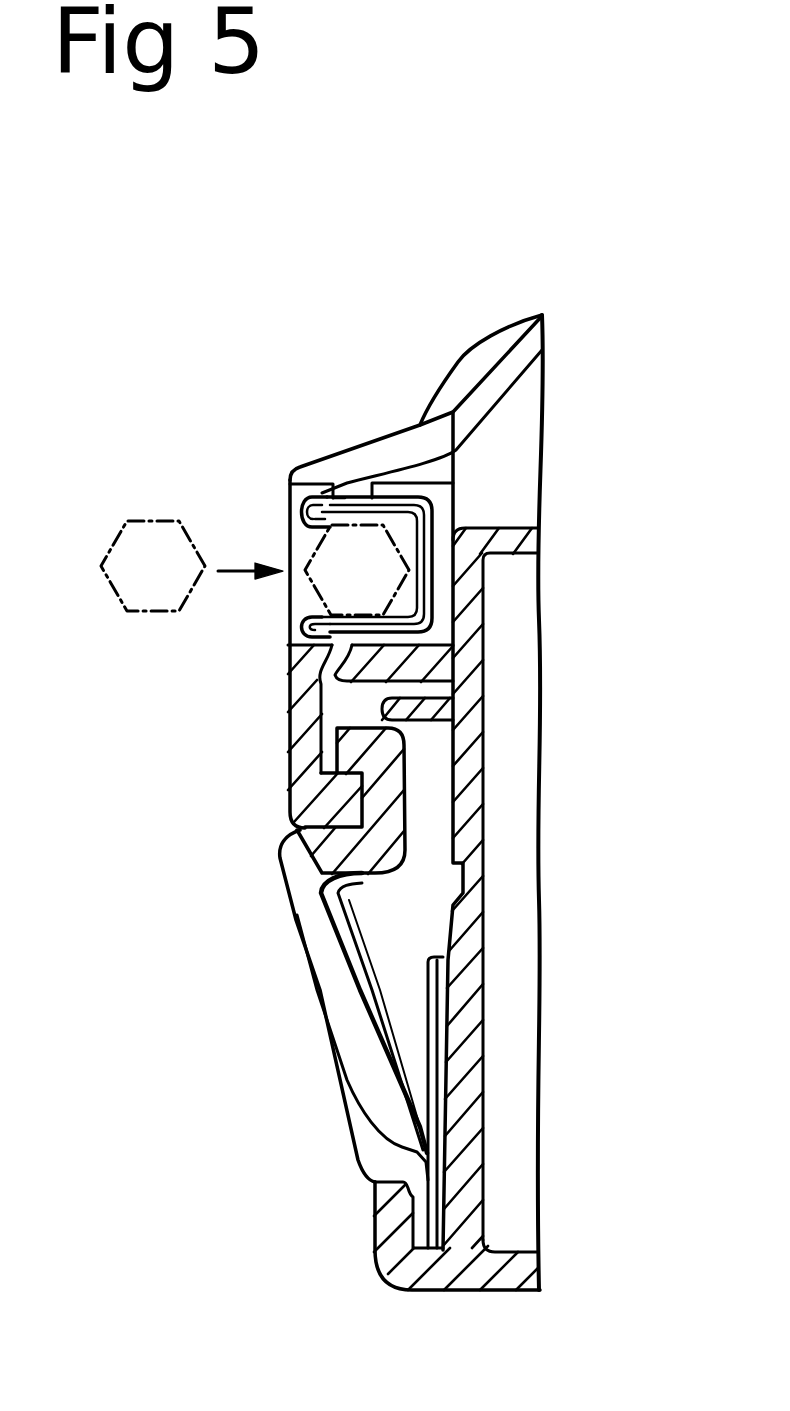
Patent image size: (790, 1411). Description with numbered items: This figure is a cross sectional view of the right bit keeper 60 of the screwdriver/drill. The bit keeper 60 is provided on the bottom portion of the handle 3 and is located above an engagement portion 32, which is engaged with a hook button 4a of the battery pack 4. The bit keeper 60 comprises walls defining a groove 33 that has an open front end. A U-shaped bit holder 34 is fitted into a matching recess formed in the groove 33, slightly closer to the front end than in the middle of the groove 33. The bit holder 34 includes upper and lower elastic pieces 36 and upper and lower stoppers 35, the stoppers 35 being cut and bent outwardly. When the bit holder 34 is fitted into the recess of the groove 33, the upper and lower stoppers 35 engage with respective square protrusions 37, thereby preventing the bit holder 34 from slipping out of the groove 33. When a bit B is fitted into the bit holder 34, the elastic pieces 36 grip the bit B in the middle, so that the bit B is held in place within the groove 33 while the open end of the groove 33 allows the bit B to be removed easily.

The handle 3 is at (490, 343).
The battery pack 4 is at (517, 987).
The hook button 4a is at (335, 1007).
The engagement portion 32 is at (290, 782).
The groove 33 is at (287, 523).
The bit holder 34 is at (320, 500).
The stopper 35 is at (386, 505).
The elastic piece 36 is at (415, 526).
The square protrusion 37 is at (348, 497).
The bit keeper 60 is at (265, 443).
The bit B is at (123, 520).